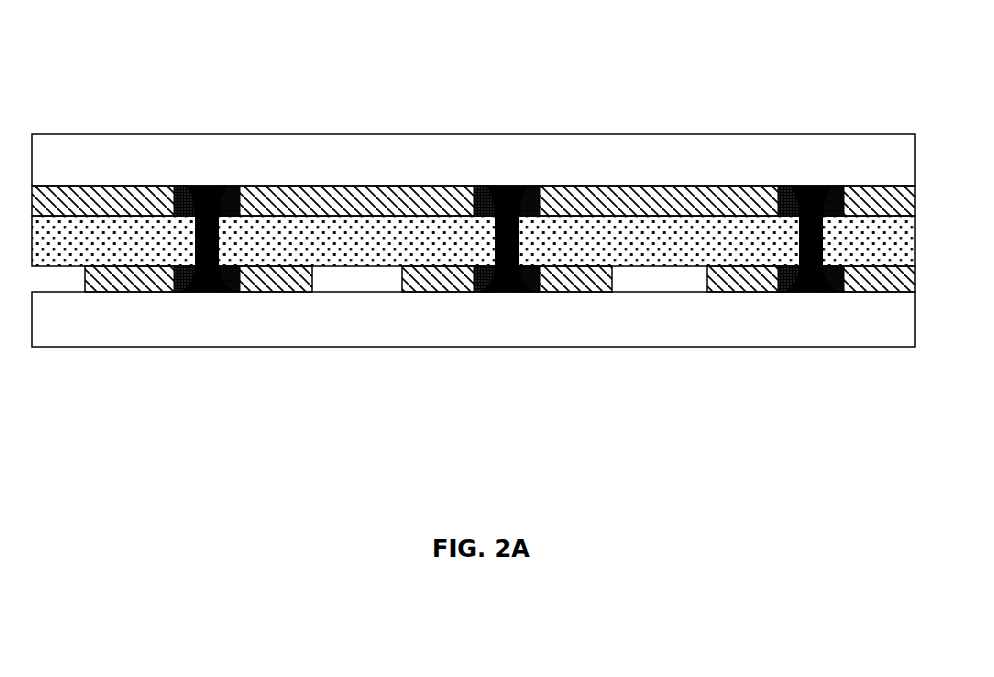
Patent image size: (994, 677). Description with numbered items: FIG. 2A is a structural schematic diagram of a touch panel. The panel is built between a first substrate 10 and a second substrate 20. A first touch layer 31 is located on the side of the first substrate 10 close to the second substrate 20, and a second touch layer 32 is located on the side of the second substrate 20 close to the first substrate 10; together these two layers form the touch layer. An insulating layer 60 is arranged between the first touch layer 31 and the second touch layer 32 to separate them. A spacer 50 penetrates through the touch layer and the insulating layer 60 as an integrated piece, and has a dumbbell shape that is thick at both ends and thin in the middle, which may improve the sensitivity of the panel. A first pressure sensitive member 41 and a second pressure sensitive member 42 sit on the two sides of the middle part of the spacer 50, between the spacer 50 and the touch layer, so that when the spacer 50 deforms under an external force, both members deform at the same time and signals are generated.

The first substrate 10 is at (473, 365).
The second substrate 20 is at (473, 94).
The first touch layer 31 is at (500, 351).
The second touch layer 32 is at (473, 109).
The first pressure sensitive member 41 is at (531, 310).
The second pressure sensitive member 42 is at (486, 310).
The spacer 50 is at (509, 311).
The insulating layer 60 is at (473, 134).